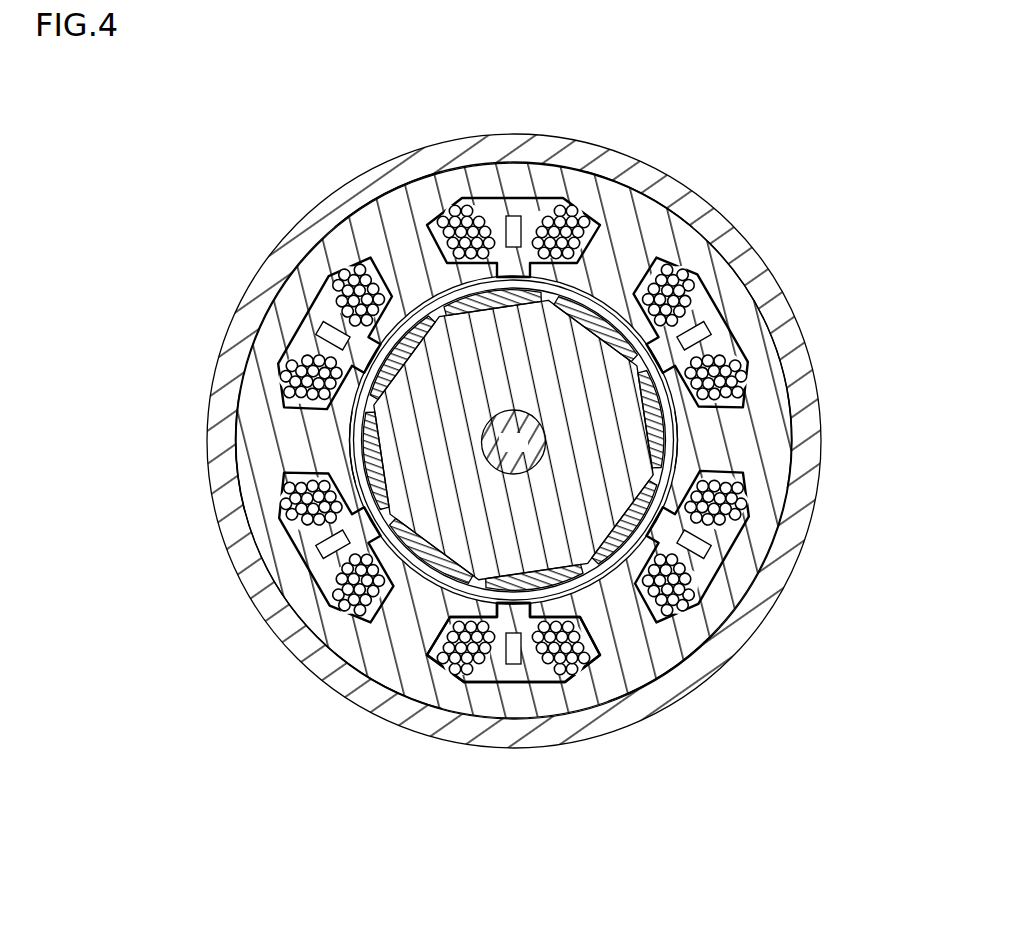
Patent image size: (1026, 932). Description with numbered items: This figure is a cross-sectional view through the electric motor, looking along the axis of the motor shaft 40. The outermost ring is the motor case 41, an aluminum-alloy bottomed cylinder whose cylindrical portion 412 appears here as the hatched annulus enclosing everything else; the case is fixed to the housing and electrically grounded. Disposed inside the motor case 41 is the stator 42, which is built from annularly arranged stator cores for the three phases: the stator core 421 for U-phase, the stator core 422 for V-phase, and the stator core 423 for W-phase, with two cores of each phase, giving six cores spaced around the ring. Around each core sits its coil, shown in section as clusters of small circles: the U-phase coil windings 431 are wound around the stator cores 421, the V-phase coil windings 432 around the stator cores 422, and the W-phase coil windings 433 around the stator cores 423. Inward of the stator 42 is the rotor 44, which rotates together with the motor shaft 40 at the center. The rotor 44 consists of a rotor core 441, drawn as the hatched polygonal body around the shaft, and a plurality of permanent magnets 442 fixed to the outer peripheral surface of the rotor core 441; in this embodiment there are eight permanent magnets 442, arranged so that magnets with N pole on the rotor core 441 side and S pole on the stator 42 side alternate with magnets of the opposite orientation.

The motor shaft 40 is at (500, 451).
The motor case 41 is at (520, 134).
The cylindrical portion 412 is at (761, 298).
The stator 42 is at (570, 163).
The stator core for U-phase 421 is at (631, 219).
The stator core for V-phase 422 is at (386, 206).
The stator core for W-phase 423 is at (258, 458).
The U-phase coil winding 431 is at (681, 266).
The V-phase coil winding 432 is at (440, 199).
The W-phase coil winding 433 is at (318, 505).
The rotor 44 is at (394, 398).
The rotor core 441 is at (407, 403).
The permanent magnet 442 is at (515, 290).